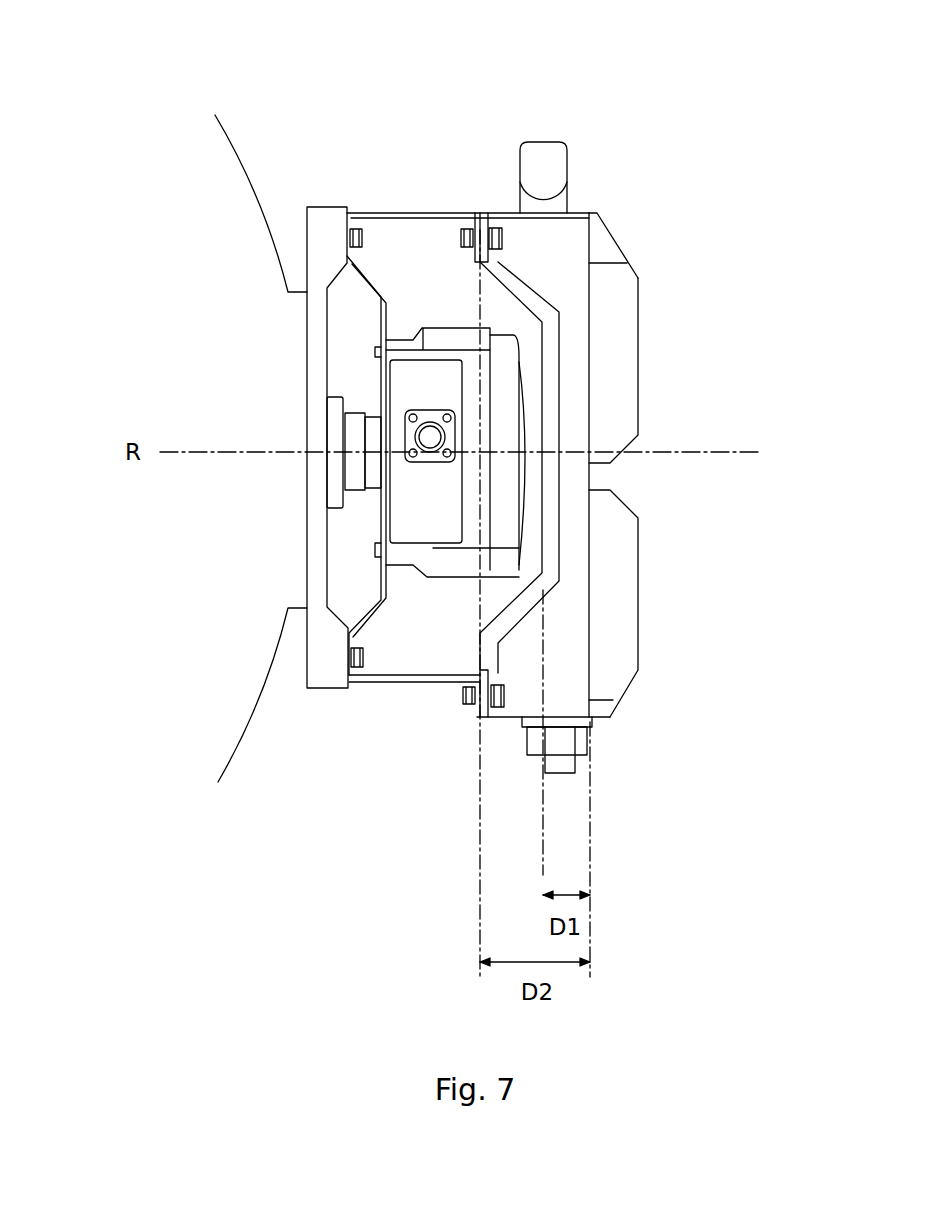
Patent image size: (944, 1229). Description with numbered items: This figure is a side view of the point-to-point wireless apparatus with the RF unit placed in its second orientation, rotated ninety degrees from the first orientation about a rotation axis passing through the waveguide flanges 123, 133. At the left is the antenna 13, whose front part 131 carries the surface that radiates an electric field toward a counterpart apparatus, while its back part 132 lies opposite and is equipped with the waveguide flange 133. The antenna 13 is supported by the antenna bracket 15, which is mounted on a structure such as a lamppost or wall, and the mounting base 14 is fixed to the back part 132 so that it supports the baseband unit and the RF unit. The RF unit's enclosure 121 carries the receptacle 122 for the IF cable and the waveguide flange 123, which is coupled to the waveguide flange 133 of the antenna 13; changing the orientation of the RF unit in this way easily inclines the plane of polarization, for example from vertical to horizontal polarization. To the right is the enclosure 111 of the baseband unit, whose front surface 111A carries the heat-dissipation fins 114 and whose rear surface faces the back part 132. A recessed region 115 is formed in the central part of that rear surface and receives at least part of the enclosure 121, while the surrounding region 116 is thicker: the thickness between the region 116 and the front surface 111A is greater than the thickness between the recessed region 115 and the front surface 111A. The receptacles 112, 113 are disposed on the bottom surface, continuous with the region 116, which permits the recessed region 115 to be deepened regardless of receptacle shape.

The antenna 13 is at (240, 110).
The front part 131 is at (267, 209).
The back part 132 is at (250, 156).
The waveguide flange 133 is at (350, 492).
The mounting base 14 is at (397, 210).
The antenna bracket 15 is at (320, 209).
The enclosure 111 is at (578, 213).
The front surface 111A is at (590, 365).
The receptacle 112 is at (590, 742).
The receptacle 113 is at (560, 775).
The heat-dissipation fins 114 is at (640, 602).
The recessed region 115 is at (508, 314).
The region 116 is at (478, 658).
The enclosure 121 is at (438, 327).
The receptacle 122 is at (438, 440).
The waveguide flange 123 is at (372, 414).